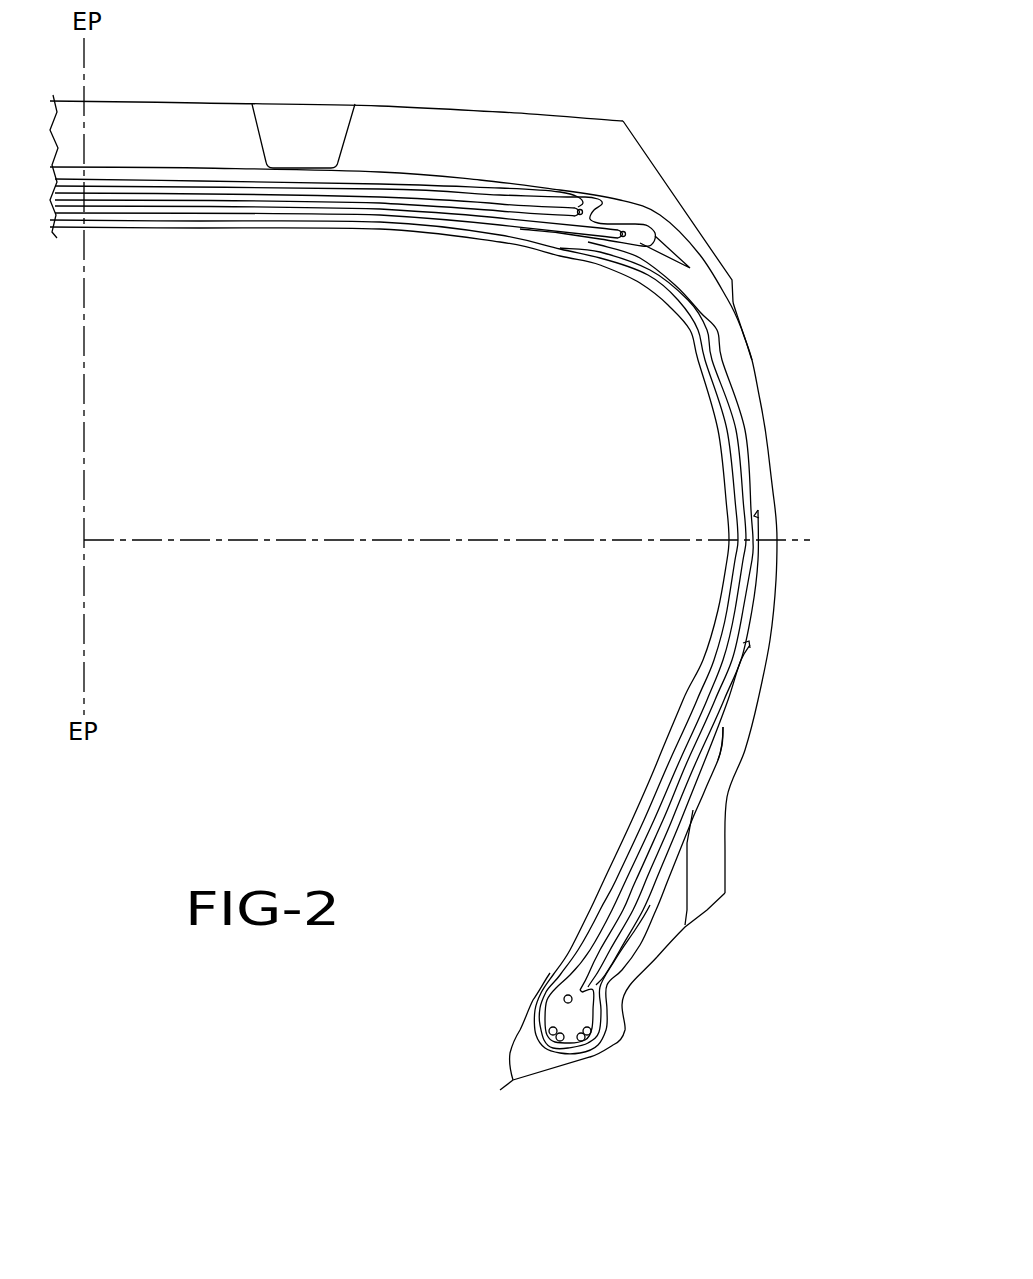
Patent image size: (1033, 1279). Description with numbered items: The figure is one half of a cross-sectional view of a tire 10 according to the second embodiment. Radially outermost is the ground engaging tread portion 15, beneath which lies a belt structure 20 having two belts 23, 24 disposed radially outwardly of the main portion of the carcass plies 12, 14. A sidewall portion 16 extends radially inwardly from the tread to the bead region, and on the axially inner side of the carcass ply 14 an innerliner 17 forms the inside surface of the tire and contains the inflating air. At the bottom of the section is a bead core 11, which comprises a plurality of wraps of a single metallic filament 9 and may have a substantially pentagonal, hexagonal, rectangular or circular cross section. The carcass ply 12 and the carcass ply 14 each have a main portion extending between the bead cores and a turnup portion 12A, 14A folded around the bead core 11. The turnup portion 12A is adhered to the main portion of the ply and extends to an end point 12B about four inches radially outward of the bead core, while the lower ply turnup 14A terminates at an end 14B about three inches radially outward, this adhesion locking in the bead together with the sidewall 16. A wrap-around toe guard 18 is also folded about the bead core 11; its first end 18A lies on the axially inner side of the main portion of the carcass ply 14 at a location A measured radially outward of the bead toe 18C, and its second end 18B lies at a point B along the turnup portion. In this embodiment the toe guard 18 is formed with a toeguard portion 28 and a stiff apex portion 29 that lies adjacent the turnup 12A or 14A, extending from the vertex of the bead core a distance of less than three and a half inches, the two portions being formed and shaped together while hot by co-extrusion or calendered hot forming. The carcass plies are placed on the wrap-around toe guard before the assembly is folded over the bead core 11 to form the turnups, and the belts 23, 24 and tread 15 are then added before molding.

The tire 10 is at (770, 98).
The tread portion 15 is at (437, 137).
The sidewall portion 16 is at (728, 792).
The innerliner 17 is at (675, 305).
The belt structure 20 is at (254, 208).
The belt 23 is at (537, 207).
The belt 24 is at (600, 230).
The carcass ply 12 is at (737, 403).
The turnup portion 12A is at (757, 577).
The end point 12B is at (758, 523).
The carcass ply 14 is at (713, 352).
The turnup portion 14A is at (735, 683).
The end 14B is at (743, 643).
The location of toe guard first end A is at (613, 878).
The location of toe guard second end B is at (720, 728).
The apex portion 29 is at (693, 810).
The toeguard portion 28 is at (637, 953).
The toe guard 18 is at (568, 1066).
The first end of toe guard 18A is at (572, 948).
The second end of toe guard 18B is at (660, 917).
The bead toe 18C is at (510, 1088).
The metallic filament 9 is at (588, 1033).
The bead core 11 is at (568, 1027).